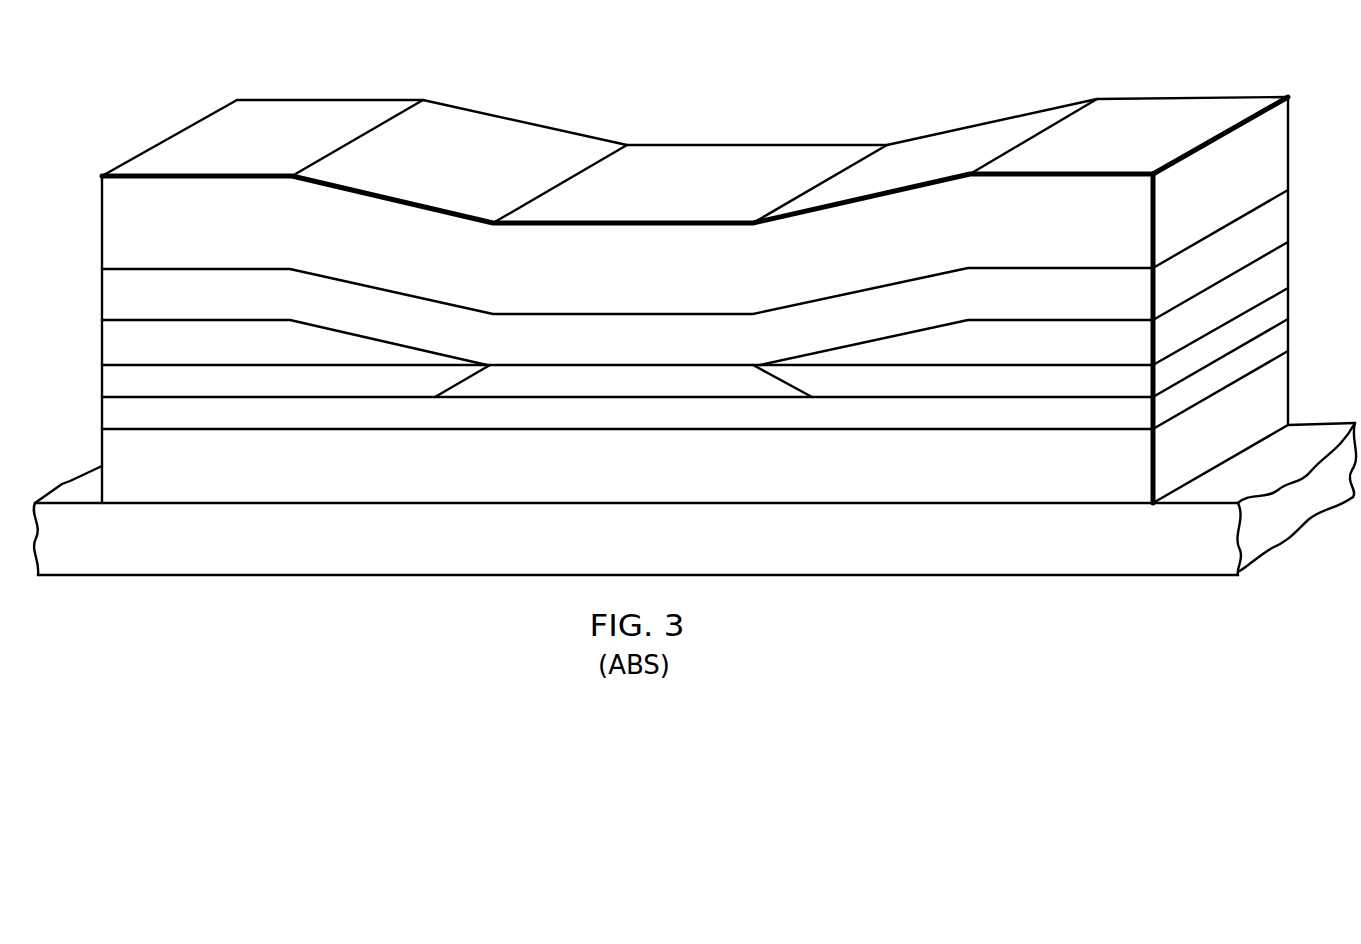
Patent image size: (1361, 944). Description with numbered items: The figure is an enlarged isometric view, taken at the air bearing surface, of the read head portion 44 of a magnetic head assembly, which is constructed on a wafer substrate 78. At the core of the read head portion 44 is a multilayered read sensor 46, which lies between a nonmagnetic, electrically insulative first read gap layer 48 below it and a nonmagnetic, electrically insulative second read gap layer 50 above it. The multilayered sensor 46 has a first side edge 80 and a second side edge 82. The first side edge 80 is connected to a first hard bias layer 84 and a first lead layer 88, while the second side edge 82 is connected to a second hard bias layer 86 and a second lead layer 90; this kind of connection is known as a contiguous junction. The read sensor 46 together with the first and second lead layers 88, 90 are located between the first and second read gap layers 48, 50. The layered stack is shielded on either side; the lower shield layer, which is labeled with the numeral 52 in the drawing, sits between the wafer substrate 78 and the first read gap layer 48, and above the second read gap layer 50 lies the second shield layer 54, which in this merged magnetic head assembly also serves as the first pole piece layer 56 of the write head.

The read head portion 44 is at (762, 109).
The multilayered read sensor 46 is at (532, 350).
The first read gap layer 48 is at (462, 413).
The second read gap layer 50 is at (347, 297).
The first shield layer (S1) 52 is at (220, 479).
The second shield layer 54 is at (244, 213).
The first pole piece layer 56 is at (627, 198).
The wafer substrate 78 is at (425, 541).
The first side edge 80 is at (453, 380).
The second side edge 82 is at (795, 380).
The first hard bias layer 84 is at (134, 380).
The second hard bias layer 86 is at (1088, 383).
The first lead layer 88 is at (133, 338).
The second lead layer 90 is at (1093, 342).